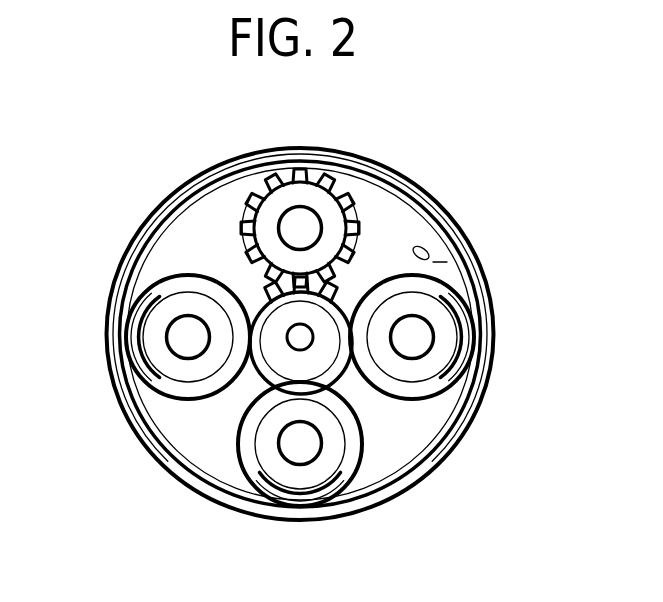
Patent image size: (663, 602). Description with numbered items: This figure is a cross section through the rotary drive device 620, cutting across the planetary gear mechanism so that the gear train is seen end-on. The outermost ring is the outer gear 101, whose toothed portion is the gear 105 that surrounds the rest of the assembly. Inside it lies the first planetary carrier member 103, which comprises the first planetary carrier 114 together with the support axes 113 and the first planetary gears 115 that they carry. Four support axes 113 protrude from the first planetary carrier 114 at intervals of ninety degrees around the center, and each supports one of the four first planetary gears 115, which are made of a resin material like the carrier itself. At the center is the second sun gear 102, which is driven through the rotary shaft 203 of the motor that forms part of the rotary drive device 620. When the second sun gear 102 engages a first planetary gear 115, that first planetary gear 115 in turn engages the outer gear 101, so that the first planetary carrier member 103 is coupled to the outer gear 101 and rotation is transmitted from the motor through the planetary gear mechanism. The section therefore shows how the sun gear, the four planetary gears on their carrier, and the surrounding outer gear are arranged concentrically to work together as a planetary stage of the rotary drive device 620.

The rotary drive device 620 is at (118, 130).
The outer gear 101 is at (438, 202).
The first planetary carrier 114 is at (191, 247).
The gear 105 is at (424, 244).
The first planetary carrier member 103 is at (302, 150).
The second sun gear 102 is at (272, 358).
The rotary shaft 203 is at (292, 344).
The first planetary gear 115 is at (263, 237).
The support axis 113 is at (310, 227).